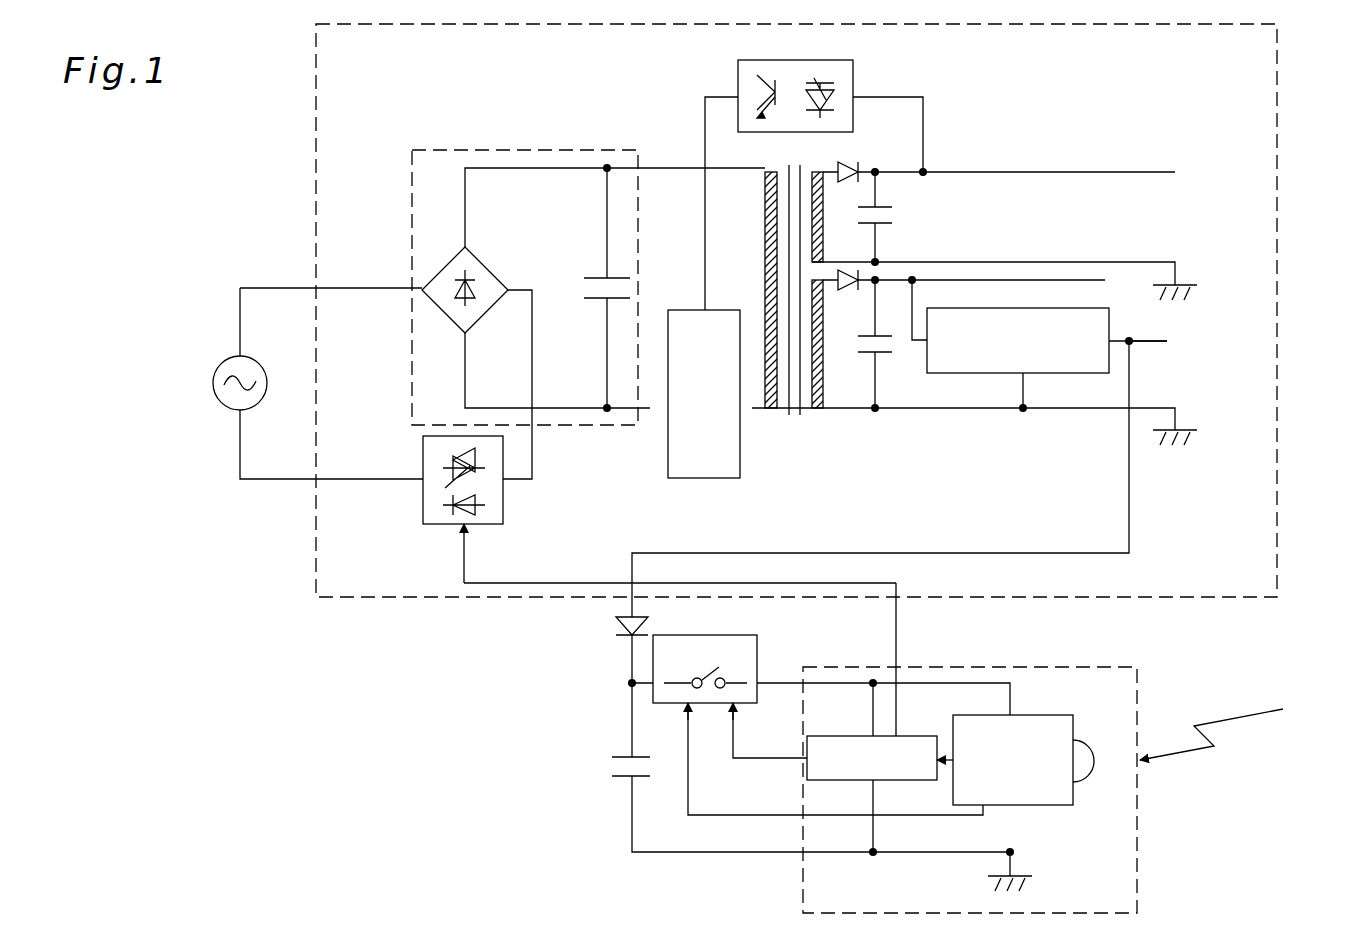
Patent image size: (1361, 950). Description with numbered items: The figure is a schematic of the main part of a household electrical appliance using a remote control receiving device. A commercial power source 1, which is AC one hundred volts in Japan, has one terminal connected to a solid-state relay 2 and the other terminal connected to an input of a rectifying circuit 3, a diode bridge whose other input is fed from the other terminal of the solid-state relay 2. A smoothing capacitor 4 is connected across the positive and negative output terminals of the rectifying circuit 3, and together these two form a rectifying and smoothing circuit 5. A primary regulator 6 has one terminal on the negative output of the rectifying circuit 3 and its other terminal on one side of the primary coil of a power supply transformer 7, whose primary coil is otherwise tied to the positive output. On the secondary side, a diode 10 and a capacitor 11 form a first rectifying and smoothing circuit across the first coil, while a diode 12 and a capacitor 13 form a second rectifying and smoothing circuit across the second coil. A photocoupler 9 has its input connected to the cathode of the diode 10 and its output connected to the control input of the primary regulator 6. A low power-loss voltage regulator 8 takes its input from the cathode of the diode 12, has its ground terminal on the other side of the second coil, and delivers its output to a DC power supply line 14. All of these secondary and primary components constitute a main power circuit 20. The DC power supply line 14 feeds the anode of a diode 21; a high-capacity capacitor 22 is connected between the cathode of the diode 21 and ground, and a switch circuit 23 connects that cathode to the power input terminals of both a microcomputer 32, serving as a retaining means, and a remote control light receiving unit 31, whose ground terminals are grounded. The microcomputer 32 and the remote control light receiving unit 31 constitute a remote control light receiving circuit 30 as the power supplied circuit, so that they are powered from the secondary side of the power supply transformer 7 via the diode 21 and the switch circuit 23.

The commercial power source 1 is at (224, 362).
The solid-state relay 2 is at (430, 525).
The rectifying circuit 3 is at (440, 272).
The smoothing capacitor 4 is at (583, 292).
The rectifying and smoothing circuit 5 is at (514, 150).
The primary regulator 6 is at (702, 478).
The power supply transformer 7 is at (793, 410).
The low power-loss voltage regulator 8 is at (1075, 308).
The photocoupler 9 is at (853, 80).
The diode 10 is at (848, 162).
The capacitor 11 is at (895, 218).
The diode 12 is at (850, 290).
The capacitor 13 is at (880, 356).
The DC power supply line 14 is at (1150, 343).
The main power circuit 20 is at (1261, 462).
The diode 21 is at (615, 625).
The high-capacity capacitor 22 is at (610, 765).
The switch circuit 23 is at (757, 665).
The remote control light receiving circuit 30 is at (1137, 893).
The remote control light receiving unit 31 is at (1040, 715).
The microcomputer 32 is at (924, 726).